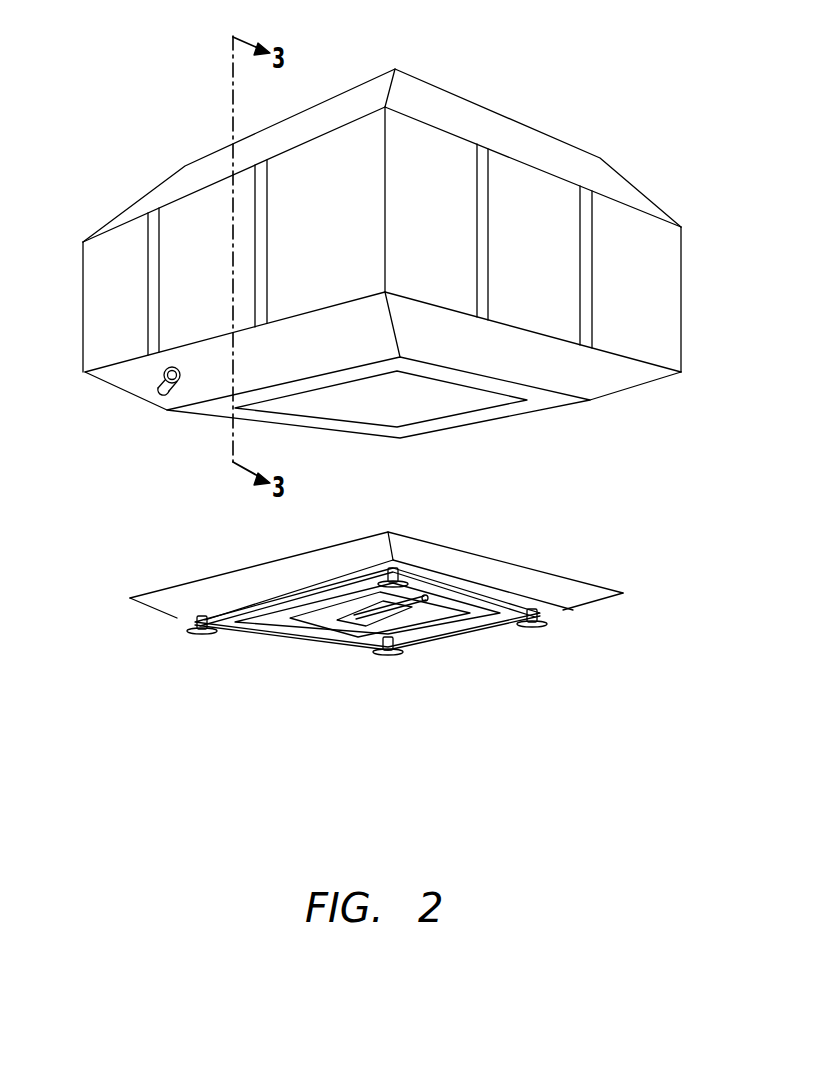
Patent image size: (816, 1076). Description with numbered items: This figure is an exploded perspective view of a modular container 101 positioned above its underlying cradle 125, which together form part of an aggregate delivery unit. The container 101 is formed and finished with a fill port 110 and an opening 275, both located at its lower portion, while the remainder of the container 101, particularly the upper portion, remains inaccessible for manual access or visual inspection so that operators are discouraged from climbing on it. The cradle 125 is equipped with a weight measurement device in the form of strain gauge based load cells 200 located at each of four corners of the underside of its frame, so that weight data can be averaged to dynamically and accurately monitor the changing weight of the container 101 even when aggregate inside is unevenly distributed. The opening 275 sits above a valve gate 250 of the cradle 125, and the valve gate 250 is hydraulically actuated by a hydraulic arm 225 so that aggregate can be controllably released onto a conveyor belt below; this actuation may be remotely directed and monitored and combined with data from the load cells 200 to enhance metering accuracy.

The modular container 101 is at (672, 67).
The fill port 110 is at (160, 377).
The opening 275 is at (447, 414).
The cradle 125 is at (112, 596).
The load cells 200 is at (402, 582).
The valve gate 250 is at (318, 617).
The hydraulic arm 225 is at (414, 607).